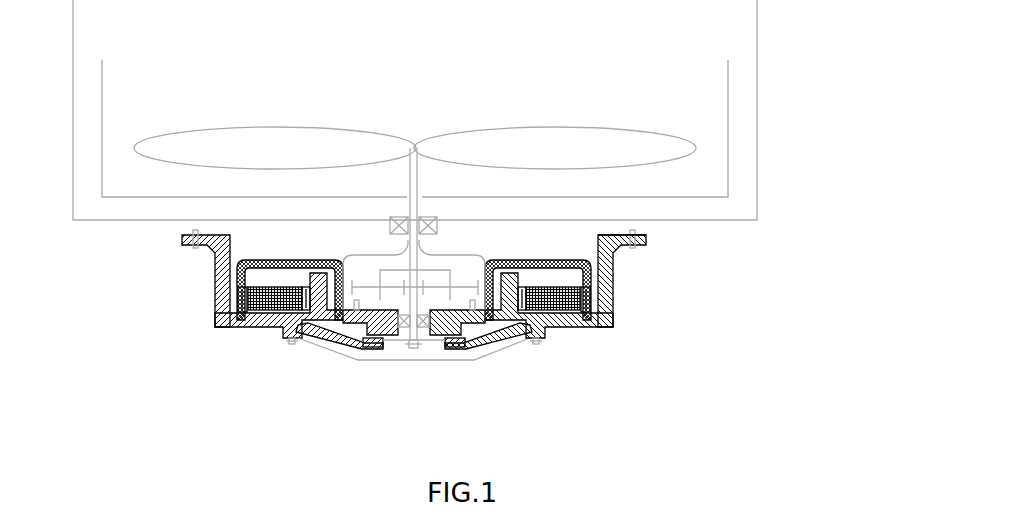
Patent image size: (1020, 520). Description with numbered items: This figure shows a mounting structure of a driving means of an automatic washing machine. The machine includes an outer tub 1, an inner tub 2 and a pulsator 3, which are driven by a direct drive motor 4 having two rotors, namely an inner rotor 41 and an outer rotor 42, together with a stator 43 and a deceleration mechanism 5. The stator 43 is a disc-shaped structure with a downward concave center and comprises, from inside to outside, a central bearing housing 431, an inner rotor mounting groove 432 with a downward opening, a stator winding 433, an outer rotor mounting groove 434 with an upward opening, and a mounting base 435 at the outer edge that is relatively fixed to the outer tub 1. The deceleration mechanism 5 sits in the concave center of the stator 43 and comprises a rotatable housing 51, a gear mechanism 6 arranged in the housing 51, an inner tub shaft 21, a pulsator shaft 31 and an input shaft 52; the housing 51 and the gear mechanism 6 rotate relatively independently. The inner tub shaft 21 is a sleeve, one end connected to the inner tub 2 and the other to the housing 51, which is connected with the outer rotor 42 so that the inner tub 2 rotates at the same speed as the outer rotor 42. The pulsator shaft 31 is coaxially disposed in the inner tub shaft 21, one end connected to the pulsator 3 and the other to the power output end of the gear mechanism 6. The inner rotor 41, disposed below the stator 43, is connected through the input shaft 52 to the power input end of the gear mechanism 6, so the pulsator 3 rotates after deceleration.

The outer tub 1 is at (757, 195).
The inner tub 2 is at (728, 152).
The pulsator 3 is at (618, 133).
The inner tub shaft 21 is at (438, 218).
The direct drive motor 4 is at (250, 341).
The inner rotor 41 is at (347, 342).
The outer rotor 42 is at (240, 275).
The stator 43 is at (240, 310).
The central bearing housing 431 is at (463, 343).
The inner rotor mounting groove 432 is at (537, 340).
The stator winding 433 is at (613, 327).
The outer rotor mounting groove 434 is at (597, 302).
The mounting base 435 is at (648, 242).
The deceleration mechanism 5 is at (472, 321).
The rotatable housing 51 is at (290, 337).
The input shaft 52 is at (415, 338).
The gear mechanism 6 is at (396, 320).
The pulsator shaft 31 is at (537, 318).